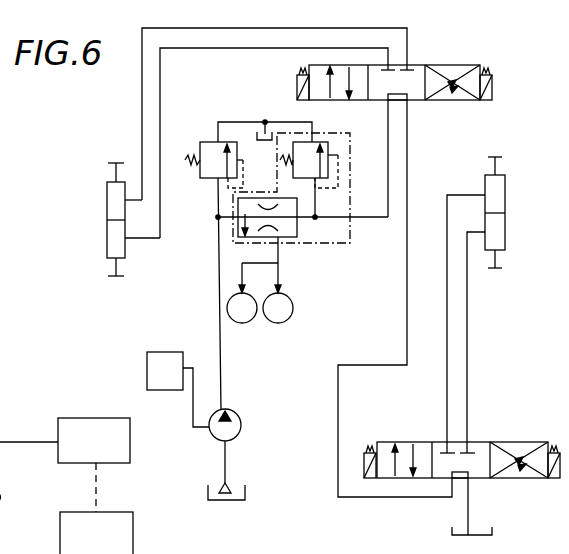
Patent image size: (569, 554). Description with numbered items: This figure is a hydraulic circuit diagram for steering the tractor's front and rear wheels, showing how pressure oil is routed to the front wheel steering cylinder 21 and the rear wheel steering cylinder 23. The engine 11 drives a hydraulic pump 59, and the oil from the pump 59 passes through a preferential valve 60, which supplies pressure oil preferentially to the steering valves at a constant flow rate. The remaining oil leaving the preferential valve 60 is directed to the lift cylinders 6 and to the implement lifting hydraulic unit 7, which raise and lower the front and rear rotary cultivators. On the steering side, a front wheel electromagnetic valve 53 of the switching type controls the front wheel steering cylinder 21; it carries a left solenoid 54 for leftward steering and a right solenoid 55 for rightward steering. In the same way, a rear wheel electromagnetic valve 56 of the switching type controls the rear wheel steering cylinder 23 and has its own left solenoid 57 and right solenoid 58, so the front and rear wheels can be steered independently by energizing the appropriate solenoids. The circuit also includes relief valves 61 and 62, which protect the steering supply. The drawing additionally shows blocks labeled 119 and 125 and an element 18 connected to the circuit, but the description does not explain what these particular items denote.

The front wheel steering cylinder 21 is at (107, 210).
The rear wheel steering cylinder 23 is at (505, 221).
The front wheel electromagnetic valve 53 is at (418, 61).
The left solenoid 54 is at (298, 90).
The right solenoid 55 is at (492, 92).
The rear wheel electromagnetic valve 56 is at (483, 436).
The left solenoid 57 is at (363, 468).
The right solenoid 58 is at (553, 481).
The hydraulic pump 59 is at (242, 418).
The preferential valve 60 is at (285, 229).
The relief valve 61 is at (210, 150).
The relief valve 62 is at (331, 161).
The lift cylinders 6 is at (248, 318).
The implement lifting hydraulic unit 7 is at (284, 318).
The engine 11 is at (174, 382).
The control block 119 is at (112, 451).
The control block 125 is at (96, 533).
The element 18 is at (12, 523).